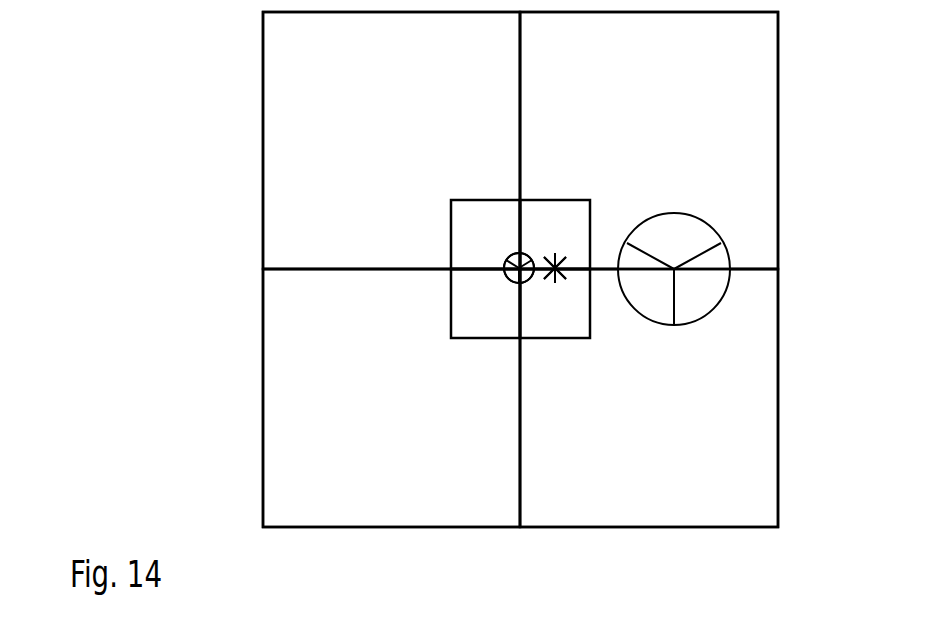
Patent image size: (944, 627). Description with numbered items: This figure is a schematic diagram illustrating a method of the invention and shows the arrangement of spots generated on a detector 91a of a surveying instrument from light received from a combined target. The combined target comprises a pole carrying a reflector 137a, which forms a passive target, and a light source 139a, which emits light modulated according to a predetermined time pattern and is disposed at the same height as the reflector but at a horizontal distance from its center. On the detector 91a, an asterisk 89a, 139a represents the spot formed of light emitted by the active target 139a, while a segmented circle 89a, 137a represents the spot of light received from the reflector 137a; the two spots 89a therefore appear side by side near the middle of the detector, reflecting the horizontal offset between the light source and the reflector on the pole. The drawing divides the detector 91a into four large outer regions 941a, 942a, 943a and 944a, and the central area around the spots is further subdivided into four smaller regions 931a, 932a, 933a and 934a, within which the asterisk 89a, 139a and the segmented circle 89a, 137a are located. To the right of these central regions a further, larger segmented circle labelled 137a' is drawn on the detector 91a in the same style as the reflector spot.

The detector 91a is at (778, 113).
The first quadrant segment 941a is at (685, 107).
The second quadrant segment 942a is at (686, 438).
The third quadrant segment 943a is at (373, 438).
The fourth quadrant segment 944a is at (373, 107).
The first central sub-segment 931a is at (559, 213).
The second central sub-segment 932a is at (577, 321).
The third central sub-segment 933a is at (483, 323).
The fourth central sub-segment 934a is at (465, 228).
The spot 89a is at (575, 382).
The reflector 137a is at (483, 208).
The light source 139a is at (574, 336).
The enlarged light spot 137a' is at (674, 233).